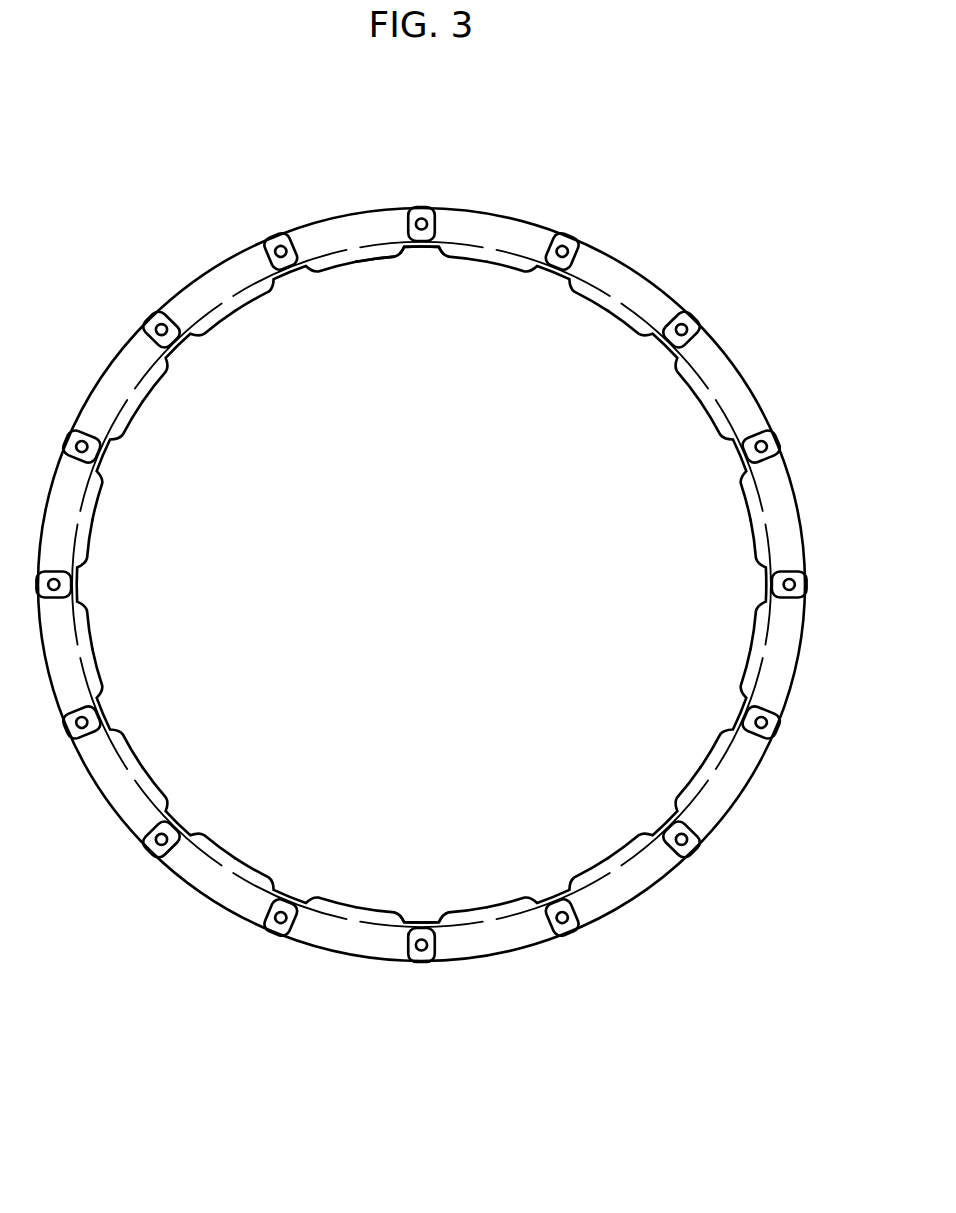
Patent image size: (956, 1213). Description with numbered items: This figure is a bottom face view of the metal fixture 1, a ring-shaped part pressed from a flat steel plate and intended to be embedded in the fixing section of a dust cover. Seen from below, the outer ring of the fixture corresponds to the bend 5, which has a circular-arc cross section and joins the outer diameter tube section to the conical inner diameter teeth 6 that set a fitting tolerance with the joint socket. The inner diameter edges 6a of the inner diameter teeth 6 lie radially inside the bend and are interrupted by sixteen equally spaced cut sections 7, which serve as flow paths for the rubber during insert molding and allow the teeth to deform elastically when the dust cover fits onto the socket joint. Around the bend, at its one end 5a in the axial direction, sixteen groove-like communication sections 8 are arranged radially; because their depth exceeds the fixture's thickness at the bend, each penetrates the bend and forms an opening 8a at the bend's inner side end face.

The metal fixture 1 is at (663, 272).
The bend 5 is at (313, 243).
The one end in the axial direction of the bend 5a is at (352, 233).
The inner diameter teeth 6 is at (337, 257).
The inner diameter edges 6a is at (373, 258).
The cut sections 7 is at (418, 250).
The communication sections 8 is at (419, 214).
The openings 8a is at (428, 221).